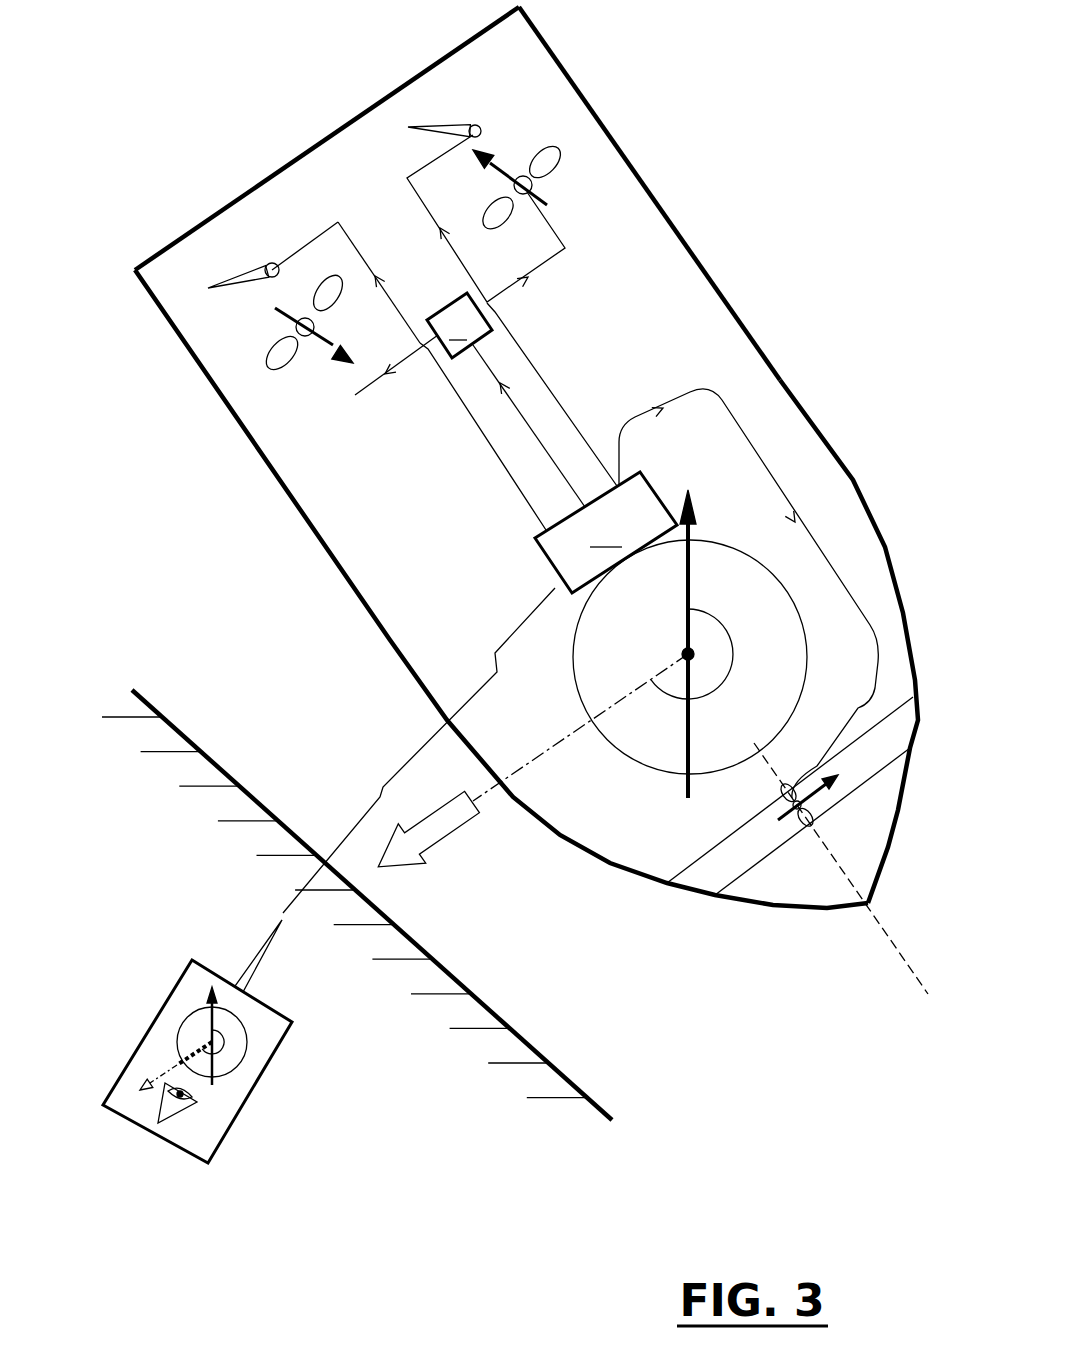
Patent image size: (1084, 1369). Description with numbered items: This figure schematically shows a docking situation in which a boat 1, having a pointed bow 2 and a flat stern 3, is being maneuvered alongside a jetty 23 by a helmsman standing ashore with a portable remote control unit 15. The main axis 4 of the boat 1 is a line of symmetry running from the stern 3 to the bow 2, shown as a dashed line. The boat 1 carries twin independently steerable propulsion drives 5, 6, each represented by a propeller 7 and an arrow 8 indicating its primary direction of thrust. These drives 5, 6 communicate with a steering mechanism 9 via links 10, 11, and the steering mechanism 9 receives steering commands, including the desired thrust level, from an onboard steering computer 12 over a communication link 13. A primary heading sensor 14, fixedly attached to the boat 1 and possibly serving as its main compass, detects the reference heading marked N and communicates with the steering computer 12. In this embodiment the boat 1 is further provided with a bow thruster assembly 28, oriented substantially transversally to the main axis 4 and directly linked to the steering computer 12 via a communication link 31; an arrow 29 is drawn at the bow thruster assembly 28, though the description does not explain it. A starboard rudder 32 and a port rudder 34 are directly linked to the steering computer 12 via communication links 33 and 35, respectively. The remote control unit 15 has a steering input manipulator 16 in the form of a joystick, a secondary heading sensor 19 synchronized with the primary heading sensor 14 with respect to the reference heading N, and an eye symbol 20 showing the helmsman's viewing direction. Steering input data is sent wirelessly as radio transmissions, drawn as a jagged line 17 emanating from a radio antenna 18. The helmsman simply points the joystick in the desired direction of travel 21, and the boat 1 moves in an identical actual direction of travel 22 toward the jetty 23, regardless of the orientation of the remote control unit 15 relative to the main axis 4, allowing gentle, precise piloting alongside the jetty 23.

The boat 1 is at (704, 246).
The pointed bow 2 is at (893, 850).
The flat stern 3 is at (363, 110).
The main axis 4 is at (885, 930).
The propulsion drive 5 is at (494, 188).
The propulsion drive 6 is at (282, 330).
The propeller 7 is at (548, 157).
The arrow indicating primary direction of thrust 8 is at (500, 170).
The steering mechanism 9 is at (459, 325).
The link 10 is at (543, 268).
The link 11 is at (374, 388).
The onboard steering computer 12 is at (606, 532).
The communication link 13 is at (522, 413).
The primary heading sensor 14 is at (607, 745).
The remote control unit 15 is at (275, 1004).
The steering input manipulator 16 is at (177, 1058).
The jagged line 17 is at (402, 770).
The radio antenna 18 is at (267, 942).
The secondary heading sensor 19 is at (180, 1037).
The eye symbol 20 is at (187, 1107).
The small hollow arrow 21 is at (142, 1097).
The actual direction of travel 22 is at (440, 840).
The jetty 23 is at (492, 1012).
The bow thruster assembly 28 is at (805, 828).
The thrust direction 29 is at (818, 812).
The communication link 31 is at (752, 447).
The starboard rudder 32 is at (245, 268).
The communication link 33 is at (448, 388).
The port rudder 34 is at (455, 124).
The communication link 35 is at (516, 333).